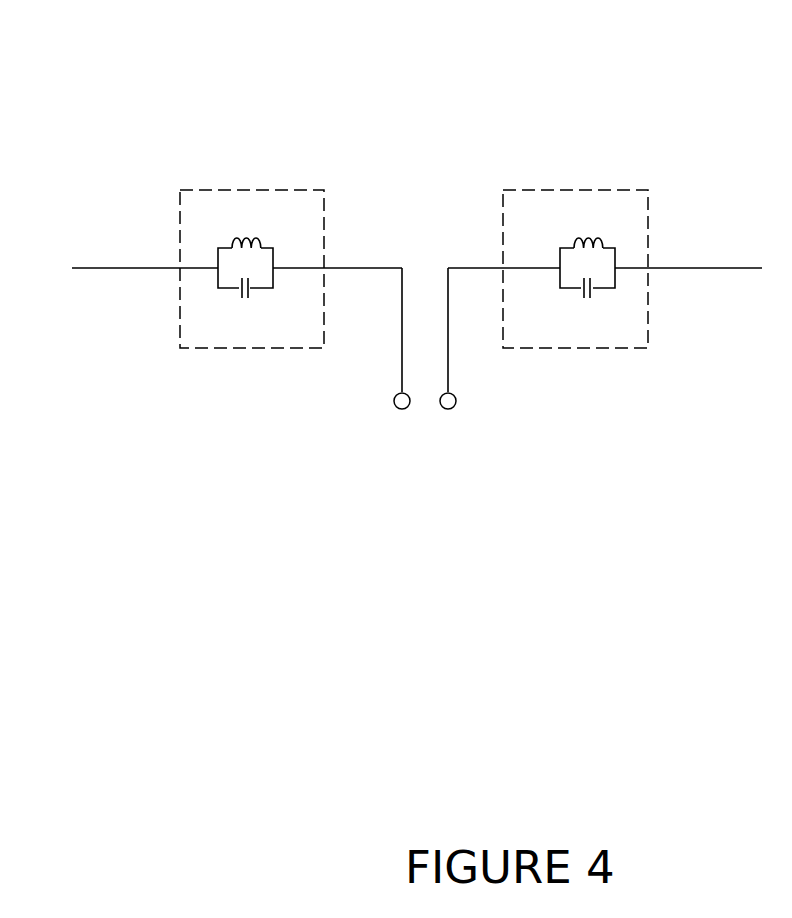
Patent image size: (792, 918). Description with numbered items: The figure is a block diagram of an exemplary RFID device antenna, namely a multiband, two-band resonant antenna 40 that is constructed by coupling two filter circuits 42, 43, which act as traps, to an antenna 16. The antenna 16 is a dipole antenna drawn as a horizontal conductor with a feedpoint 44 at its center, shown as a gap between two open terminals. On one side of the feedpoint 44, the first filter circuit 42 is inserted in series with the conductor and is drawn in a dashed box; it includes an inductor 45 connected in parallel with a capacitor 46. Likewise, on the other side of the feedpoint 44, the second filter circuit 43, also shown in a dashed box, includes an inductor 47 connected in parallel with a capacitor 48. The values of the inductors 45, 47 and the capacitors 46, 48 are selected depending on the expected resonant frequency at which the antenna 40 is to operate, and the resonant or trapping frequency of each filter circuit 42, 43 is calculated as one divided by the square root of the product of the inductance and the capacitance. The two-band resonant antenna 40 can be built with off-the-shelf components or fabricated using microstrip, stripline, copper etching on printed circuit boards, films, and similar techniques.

The multiband resonant antenna 40 is at (110, 65).
The antenna 16 is at (97, 268).
The filter circuit 42 is at (302, 188).
The filter circuit 43 is at (627, 188).
The feedpoint 44 is at (422, 397).
The inductor 45 is at (258, 237).
The capacitor 46 is at (248, 295).
The inductor 47 is at (575, 240).
The capacitor 48 is at (583, 295).